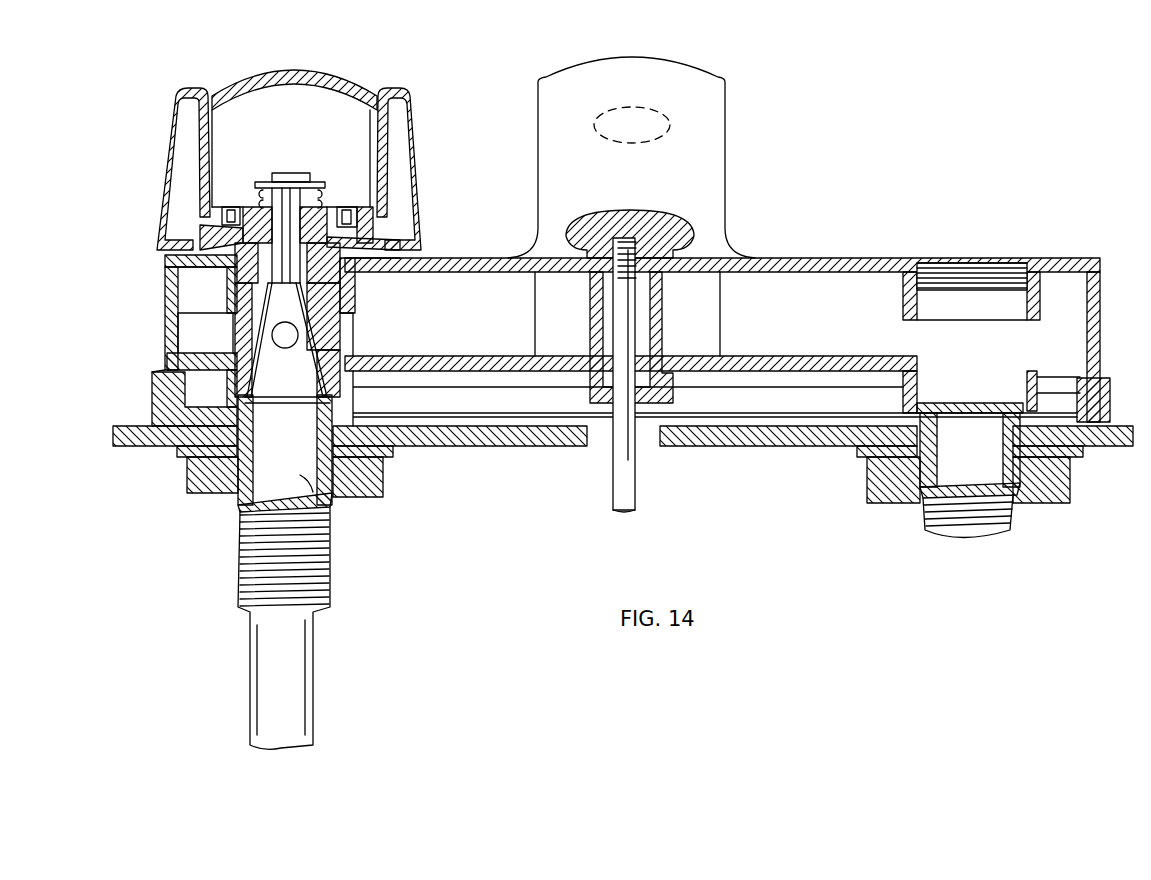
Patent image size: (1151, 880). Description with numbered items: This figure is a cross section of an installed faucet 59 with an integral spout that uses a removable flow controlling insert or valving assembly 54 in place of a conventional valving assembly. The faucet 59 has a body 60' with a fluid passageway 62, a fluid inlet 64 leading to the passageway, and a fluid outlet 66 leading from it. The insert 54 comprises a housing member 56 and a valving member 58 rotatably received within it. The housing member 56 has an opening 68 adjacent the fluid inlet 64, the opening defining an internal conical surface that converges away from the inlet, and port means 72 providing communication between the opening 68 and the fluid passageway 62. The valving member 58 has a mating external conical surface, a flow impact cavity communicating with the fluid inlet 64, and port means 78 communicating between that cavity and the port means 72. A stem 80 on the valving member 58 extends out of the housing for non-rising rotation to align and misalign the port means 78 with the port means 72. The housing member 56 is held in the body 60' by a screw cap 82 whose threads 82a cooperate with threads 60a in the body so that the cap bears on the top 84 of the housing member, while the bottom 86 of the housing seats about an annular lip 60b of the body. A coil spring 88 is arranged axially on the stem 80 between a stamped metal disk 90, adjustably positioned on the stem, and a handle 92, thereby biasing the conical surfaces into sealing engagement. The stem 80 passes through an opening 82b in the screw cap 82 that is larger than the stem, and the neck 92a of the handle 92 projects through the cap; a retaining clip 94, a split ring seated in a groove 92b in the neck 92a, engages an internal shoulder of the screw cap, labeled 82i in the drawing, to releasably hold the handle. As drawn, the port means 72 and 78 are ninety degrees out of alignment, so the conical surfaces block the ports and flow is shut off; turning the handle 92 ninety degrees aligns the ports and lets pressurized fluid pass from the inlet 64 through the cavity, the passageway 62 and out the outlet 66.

The removable flow controlling insert 54 is at (367, 305).
The housing member 56 is at (345, 293).
The valving member 58 is at (248, 360).
The faucet 59 is at (777, 128).
The body 60' is at (727, 303).
The threads 60a is at (235, 272).
The annular lip 60b is at (220, 400).
The fluid passageway 62 is at (512, 343).
The fluid inlet 64 is at (332, 497).
The fluid outlet 66 is at (653, 107).
The opening 68 is at (327, 398).
The port means 72 is at (263, 318).
The port means 78 is at (297, 335).
The stem 80 is at (290, 185).
The screw cap 82 is at (223, 200).
The threads 82a is at (420, 262).
The opening 82b is at (289, 300).
The valve member inner lip 82i is at (240, 207).
The top 84 is at (240, 250).
The bottom 86 is at (225, 455).
The coil spring 88 is at (345, 92).
The stamped metal disk 90 is at (263, 200).
The handle 92 is at (172, 130).
The neck 92a is at (287, 343).
The groove 92b is at (335, 200).
The retaining clip 94 is at (367, 227).